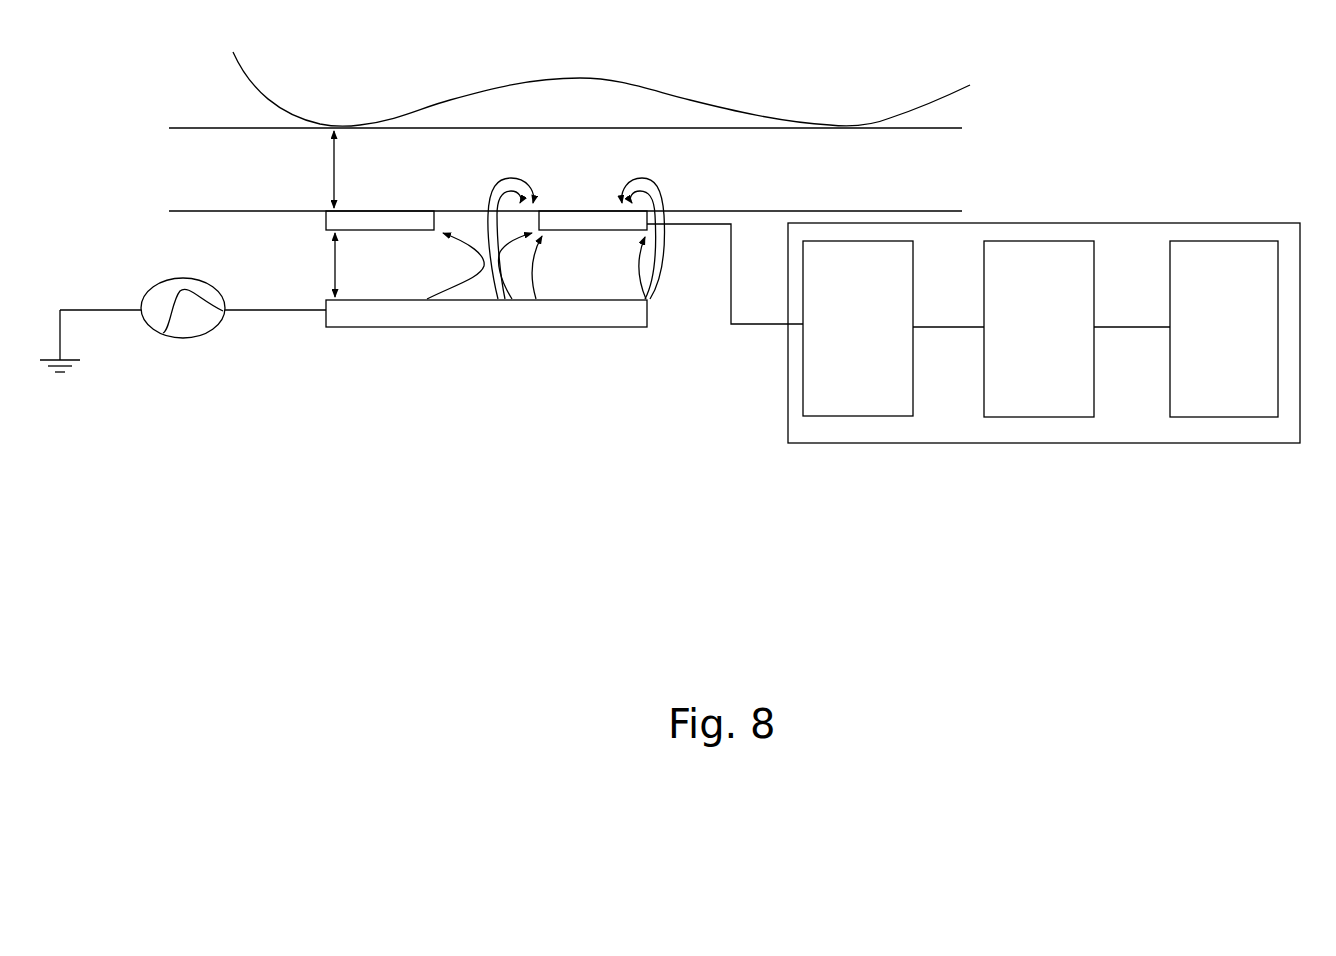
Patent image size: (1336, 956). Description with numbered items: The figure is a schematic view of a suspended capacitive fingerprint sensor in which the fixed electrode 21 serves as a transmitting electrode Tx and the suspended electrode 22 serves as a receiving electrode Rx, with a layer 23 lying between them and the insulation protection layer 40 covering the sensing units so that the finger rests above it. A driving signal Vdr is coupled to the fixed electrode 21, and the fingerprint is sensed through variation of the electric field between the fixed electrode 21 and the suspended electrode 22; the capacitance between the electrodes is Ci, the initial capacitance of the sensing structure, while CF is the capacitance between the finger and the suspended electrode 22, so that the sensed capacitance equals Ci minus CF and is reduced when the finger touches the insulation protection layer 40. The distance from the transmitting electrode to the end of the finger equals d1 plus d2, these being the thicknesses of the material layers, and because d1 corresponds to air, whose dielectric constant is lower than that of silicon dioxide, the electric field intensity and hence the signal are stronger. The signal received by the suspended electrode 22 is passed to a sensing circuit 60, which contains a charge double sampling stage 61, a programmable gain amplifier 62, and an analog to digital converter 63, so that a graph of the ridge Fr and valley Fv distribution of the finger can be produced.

The insulation protection layer 40 is at (813, 145).
The suspended electrode 22 is at (383, 220).
The fixed electrode 21 is at (492, 328).
The dielectric layer 23 is at (577, 275).
The sensing circuit 60 is at (1044, 325).
The correlated double sampling (CDS) unit 61 is at (864, 417).
The programmable gain amplifier (PGA) 62 is at (1040, 417).
The analog-to-digital converter (ADC) 63 is at (1217, 417).
The ridge Fr is at (345, 125).
The valley Fv is at (625, 82).
The capacitance between finger and suspended electrode CF is at (560, 226).
The initial capacitance Ci is at (455, 266).
The driving signal Vdr is at (197, 332).
The thickness of material layer d1 is at (315, 265).
The thickness of material layer d2 is at (308, 169).